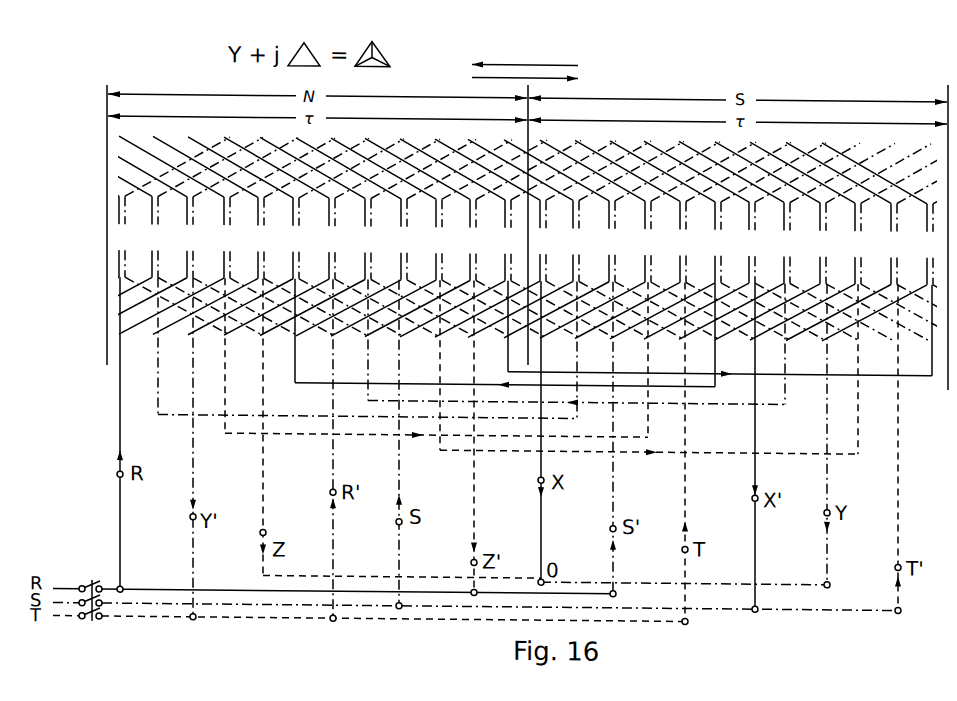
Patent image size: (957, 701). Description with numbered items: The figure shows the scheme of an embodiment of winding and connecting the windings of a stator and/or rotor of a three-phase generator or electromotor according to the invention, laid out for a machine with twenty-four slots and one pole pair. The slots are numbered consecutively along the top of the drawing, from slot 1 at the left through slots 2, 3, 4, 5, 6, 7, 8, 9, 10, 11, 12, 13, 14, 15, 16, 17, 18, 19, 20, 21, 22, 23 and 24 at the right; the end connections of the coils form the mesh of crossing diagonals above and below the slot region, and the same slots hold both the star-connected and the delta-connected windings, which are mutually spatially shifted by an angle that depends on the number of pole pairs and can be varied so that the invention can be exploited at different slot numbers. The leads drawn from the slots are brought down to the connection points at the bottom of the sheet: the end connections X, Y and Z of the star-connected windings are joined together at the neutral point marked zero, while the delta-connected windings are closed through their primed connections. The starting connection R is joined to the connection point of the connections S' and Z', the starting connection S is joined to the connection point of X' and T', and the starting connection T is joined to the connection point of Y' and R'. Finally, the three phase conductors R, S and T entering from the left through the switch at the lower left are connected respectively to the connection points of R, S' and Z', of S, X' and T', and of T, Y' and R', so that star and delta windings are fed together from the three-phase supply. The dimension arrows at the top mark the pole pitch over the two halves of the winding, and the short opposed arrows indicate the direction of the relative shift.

The winding 1 is at (122, 235).
The winding 2 is at (155, 235).
The winding 3 is at (190, 236).
The winding 4 is at (227, 236).
The winding 5 is at (261, 236).
The winding 6 is at (296, 237).
The stator slot 7 is at (332, 237).
The stator slot 8 is at (368, 237).
The stator slot 9 is at (404, 238).
The stator slot 10 is at (439, 238).
The stator slot 11 is at (473, 238).
The stator slot 12 is at (508, 239).
The stator slot 13 is at (543, 239).
The stator slot 14 is at (576, 239).
The stator slot 15 is at (612, 240).
The stator slot 16 is at (648, 240).
The stator slot 17 is at (683, 240).
The stator slot 18 is at (718, 241).
The stator slot 19 is at (752, 241).
The stator slot 20 is at (787, 241).
The stator slot 21 is at (823, 242).
The stator slot 22 is at (853, 242).
The stator slot 23 is at (871, 242).
The stator slot 24 is at (889, 243).